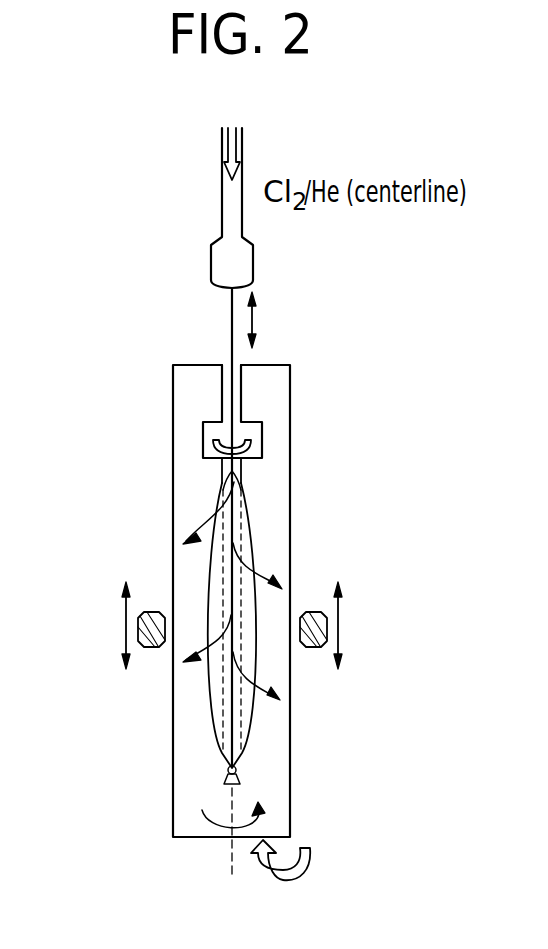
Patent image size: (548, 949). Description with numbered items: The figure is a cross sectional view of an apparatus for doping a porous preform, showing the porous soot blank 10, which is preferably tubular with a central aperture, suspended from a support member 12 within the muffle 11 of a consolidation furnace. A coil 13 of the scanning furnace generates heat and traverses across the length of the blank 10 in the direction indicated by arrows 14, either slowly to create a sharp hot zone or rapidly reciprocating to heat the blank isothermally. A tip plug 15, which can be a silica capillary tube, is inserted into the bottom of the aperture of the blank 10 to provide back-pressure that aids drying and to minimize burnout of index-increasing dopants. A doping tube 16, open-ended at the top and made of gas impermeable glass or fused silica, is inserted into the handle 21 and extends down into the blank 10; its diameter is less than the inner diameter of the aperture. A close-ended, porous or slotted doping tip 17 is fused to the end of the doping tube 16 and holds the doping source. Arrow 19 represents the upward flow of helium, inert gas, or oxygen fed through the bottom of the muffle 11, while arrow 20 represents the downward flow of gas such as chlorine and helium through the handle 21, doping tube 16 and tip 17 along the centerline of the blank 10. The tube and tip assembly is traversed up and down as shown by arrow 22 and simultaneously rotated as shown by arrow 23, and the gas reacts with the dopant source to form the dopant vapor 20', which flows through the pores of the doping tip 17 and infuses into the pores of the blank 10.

The blank 10 is at (258, 530).
The muffle 11 is at (173, 808).
The support member 12 is at (207, 410).
The coil 13 is at (313, 648).
The arrows 14 is at (122, 630).
The tip plug 15 is at (237, 772).
The doping tube 16 is at (232, 316).
The doping tip 17 is at (215, 735).
The arrow 19 is at (270, 872).
The arrow 20 is at (257, 134).
The dopant vapor 20' is at (233, 615).
The handle 21 is at (222, 214).
The arrow 22 is at (254, 323).
The arrow 23 is at (203, 812).